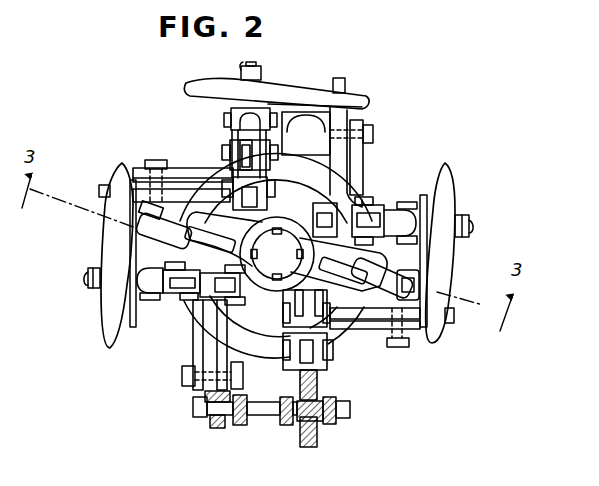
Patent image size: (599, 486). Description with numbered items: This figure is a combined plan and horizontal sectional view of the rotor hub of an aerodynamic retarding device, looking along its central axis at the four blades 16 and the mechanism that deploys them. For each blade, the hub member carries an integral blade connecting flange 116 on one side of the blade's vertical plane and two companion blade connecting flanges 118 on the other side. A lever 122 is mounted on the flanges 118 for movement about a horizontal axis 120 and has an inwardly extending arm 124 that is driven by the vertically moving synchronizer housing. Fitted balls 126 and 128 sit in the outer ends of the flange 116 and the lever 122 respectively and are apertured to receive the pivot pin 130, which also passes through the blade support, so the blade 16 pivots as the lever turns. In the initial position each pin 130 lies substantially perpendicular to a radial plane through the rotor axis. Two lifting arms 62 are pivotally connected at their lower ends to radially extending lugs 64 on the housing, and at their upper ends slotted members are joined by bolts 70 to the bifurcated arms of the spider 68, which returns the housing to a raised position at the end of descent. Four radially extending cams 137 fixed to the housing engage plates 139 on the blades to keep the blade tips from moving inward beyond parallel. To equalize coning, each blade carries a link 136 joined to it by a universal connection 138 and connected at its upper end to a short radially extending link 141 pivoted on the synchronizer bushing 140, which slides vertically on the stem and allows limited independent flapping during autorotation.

The blade 16 is at (284, 92).
The lifting arm 62 is at (176, 238).
The radially extending lug 64 is at (318, 141).
The spider 68 is at (296, 228).
The bolt 70 is at (222, 222).
The blade connecting flange 116 is at (239, 70).
The companion blade connecting flange 118 is at (187, 172).
The horizontal axis 120 is at (156, 160).
The lever 122 is at (342, 79).
The inwardly extending arm 124 is at (212, 350).
The fitted ball 126 is at (320, 428).
The fitted ball 128 is at (212, 418).
The pivot pin 130 is at (265, 412).
The link 136 is at (158, 297).
The radially extending cam 137 is at (418, 282).
The universal connection 138 is at (231, 120).
The plate 139 is at (425, 330).
The synchronizer bushing 140 is at (283, 212).
The short radially extending link 141 is at (205, 300).